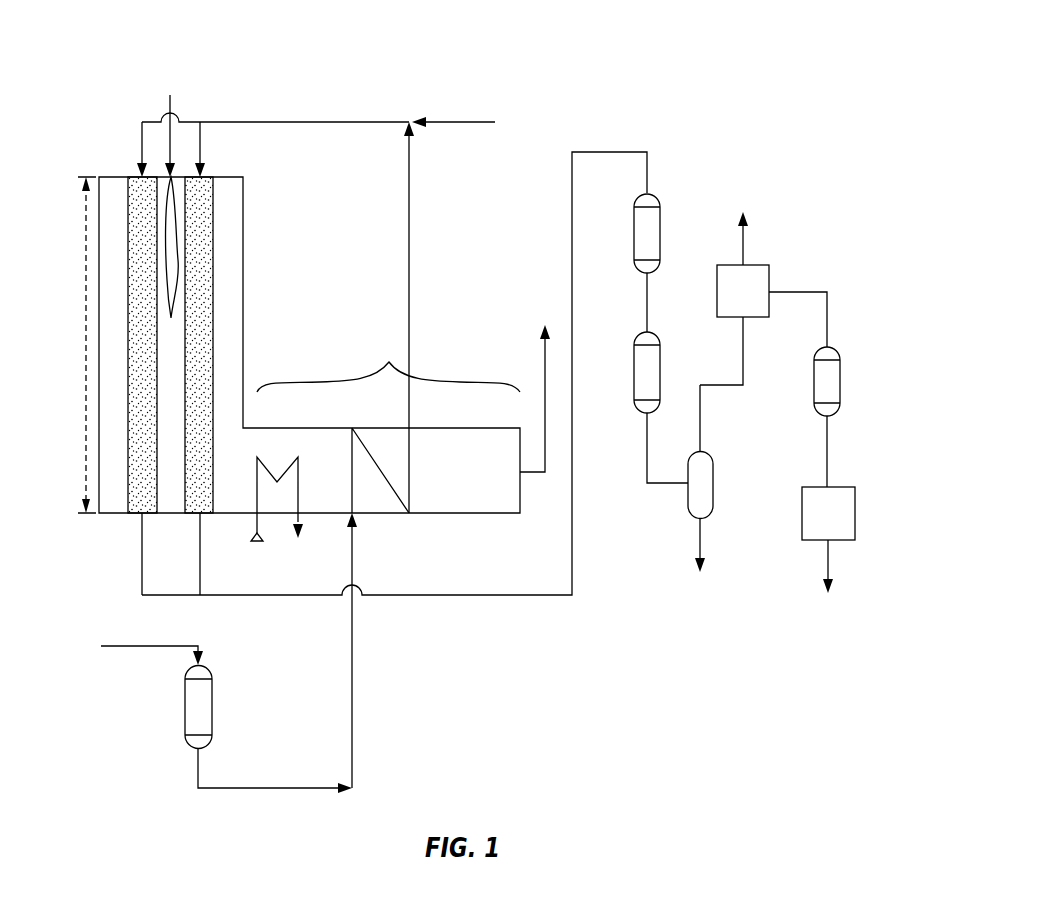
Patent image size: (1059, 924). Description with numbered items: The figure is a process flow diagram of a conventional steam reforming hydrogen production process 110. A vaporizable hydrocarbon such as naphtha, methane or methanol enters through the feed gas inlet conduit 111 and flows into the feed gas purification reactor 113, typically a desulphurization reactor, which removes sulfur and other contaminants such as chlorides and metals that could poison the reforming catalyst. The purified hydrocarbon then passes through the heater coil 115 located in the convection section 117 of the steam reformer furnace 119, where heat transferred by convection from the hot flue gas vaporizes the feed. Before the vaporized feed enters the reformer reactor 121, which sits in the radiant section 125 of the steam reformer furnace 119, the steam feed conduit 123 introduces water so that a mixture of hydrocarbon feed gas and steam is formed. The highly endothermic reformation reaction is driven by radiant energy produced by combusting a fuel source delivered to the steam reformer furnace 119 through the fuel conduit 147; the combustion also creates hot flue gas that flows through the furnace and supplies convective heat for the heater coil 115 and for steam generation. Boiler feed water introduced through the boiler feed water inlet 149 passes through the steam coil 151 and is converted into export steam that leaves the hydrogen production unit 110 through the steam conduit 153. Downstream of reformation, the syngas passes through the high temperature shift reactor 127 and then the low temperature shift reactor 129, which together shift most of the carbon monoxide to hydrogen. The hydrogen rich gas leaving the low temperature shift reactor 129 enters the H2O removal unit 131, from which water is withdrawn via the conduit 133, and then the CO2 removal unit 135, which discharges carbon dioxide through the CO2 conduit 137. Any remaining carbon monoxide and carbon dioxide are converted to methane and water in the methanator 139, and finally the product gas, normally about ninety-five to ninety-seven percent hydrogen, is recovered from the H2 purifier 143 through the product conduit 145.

The hydrogen production process 110 is at (624, 50).
The feed gas inlet conduit 111 is at (150, 645).
The feed gas purification reactor 113 is at (185, 708).
The heater coil 115 is at (390, 450).
The convection section 117 is at (388, 361).
The steam reformer furnace 119 is at (243, 325).
The reformer reactor 121 is at (205, 280).
The steam feed conduit 123 is at (450, 121).
The radiant section 125 is at (85, 347).
The high temperature shift reactor 127 is at (660, 215).
The low temperature shift reactor 129 is at (662, 372).
The H2O removal unit 131 is at (700, 540).
The conduit 133 is at (714, 484).
The CO2 removal unit 135 is at (772, 277).
The CO2 conduit 137 is at (745, 242).
The methanator 139 is at (842, 380).
The H2 purifier 143 is at (838, 487).
The product conduit 145 is at (826, 562).
The fuel conduit 147 is at (170, 105).
The boiler feed water inlet 149 is at (254, 541).
The steam coil 151 is at (270, 465).
The steam conduit 153 is at (302, 522).